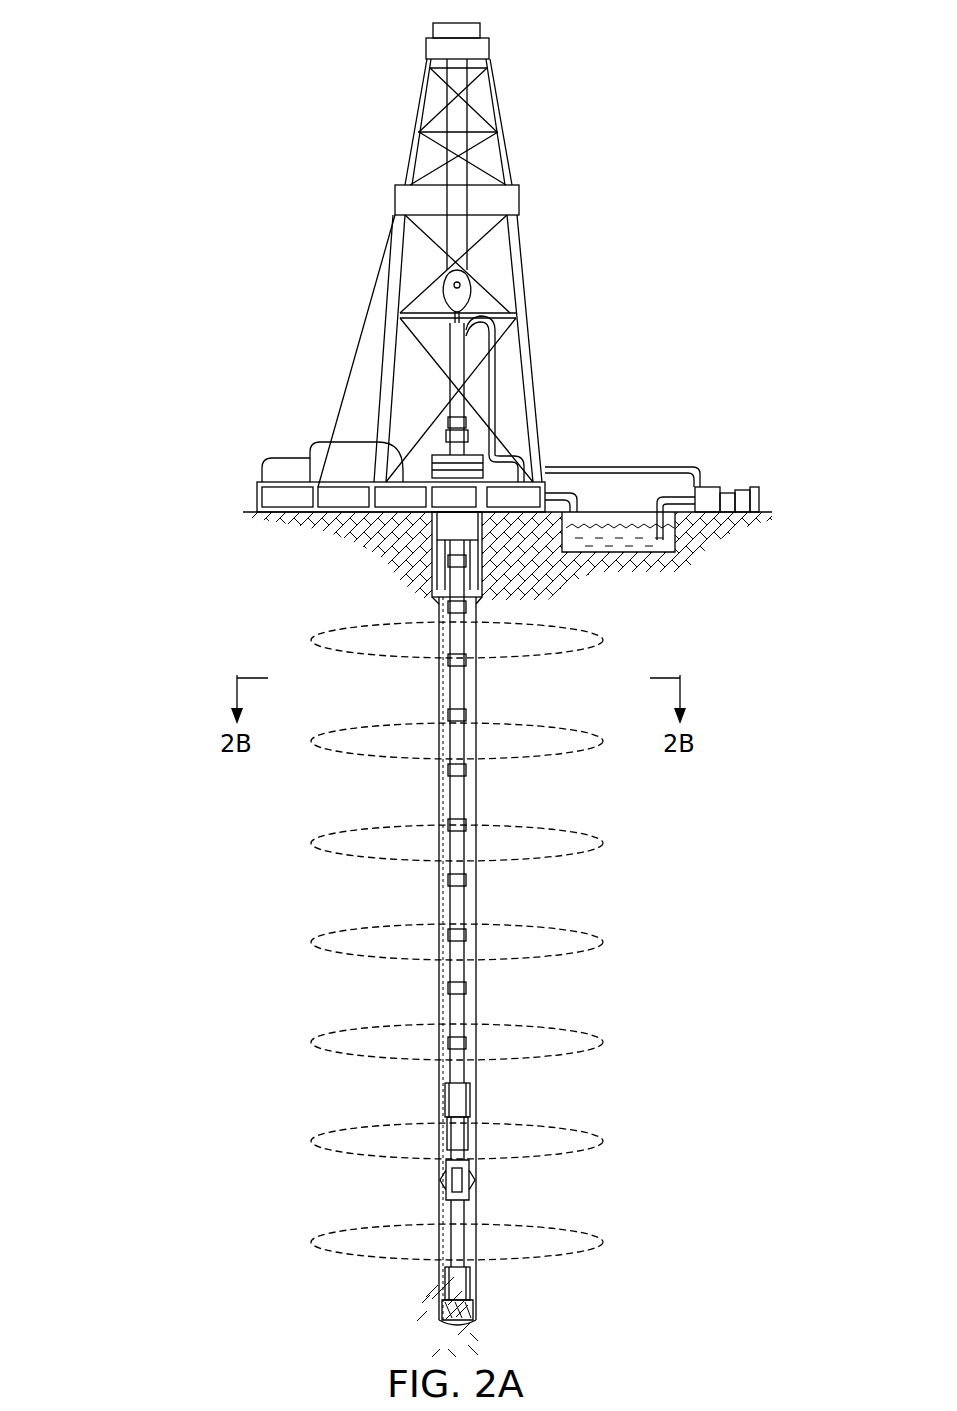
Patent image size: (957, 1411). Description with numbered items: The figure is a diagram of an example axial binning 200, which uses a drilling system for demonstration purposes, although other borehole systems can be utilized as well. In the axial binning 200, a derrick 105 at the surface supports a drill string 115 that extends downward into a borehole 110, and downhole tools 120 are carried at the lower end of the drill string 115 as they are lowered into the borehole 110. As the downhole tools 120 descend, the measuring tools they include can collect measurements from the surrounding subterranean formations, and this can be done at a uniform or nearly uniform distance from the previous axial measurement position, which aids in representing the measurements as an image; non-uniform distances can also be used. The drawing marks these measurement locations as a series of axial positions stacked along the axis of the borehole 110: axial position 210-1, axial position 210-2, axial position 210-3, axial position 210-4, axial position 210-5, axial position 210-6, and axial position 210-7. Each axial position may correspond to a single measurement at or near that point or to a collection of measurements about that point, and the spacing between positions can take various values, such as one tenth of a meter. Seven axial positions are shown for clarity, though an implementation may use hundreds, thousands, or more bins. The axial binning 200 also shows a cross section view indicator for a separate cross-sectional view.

The axial binning 200 is at (203, 142).
The derrick 105 is at (530, 365).
The borehole 110 is at (470, 704).
The drill string 115 is at (464, 800).
The downhole tools 120 is at (516, 1268).
The axial position 210-1 is at (342, 655).
The axial position 210-2 is at (342, 755).
The axial position 210-3 is at (342, 855).
The axial position 210-4 is at (342, 955).
The axial position 210-5 is at (342, 1055).
The axial position 210-6 is at (342, 1155).
The axial position 210-7 is at (342, 1255).